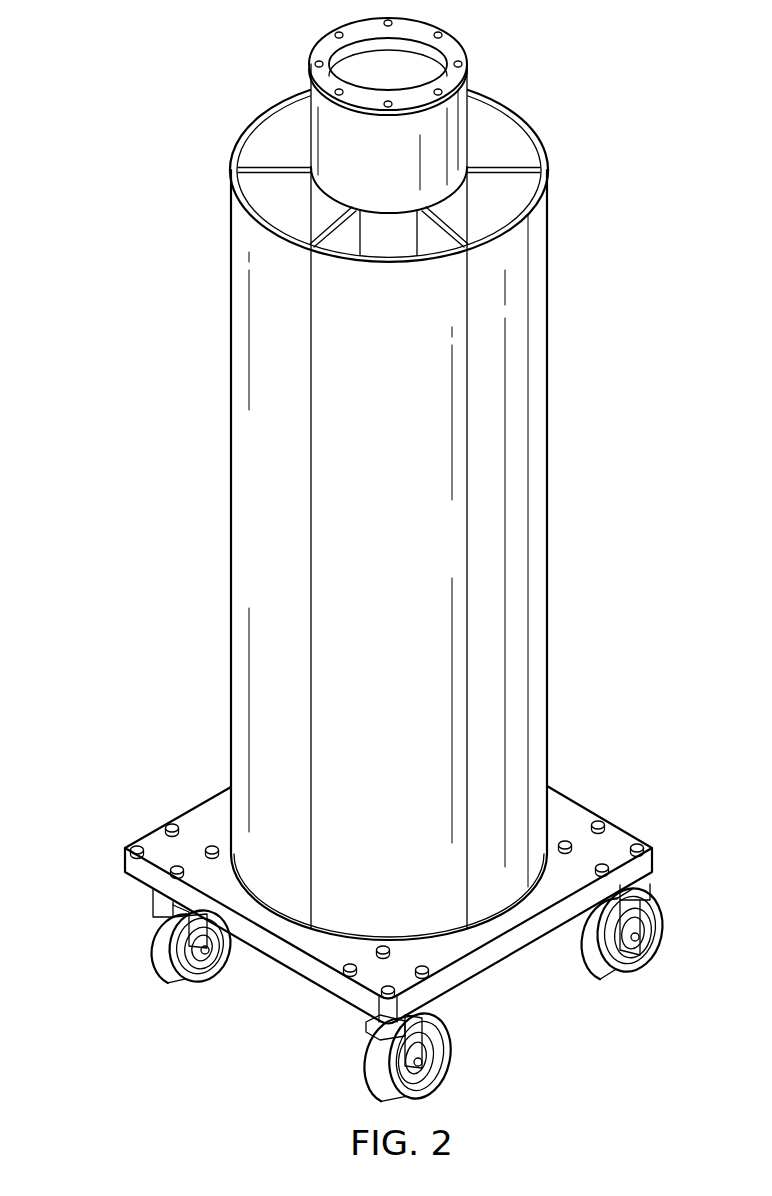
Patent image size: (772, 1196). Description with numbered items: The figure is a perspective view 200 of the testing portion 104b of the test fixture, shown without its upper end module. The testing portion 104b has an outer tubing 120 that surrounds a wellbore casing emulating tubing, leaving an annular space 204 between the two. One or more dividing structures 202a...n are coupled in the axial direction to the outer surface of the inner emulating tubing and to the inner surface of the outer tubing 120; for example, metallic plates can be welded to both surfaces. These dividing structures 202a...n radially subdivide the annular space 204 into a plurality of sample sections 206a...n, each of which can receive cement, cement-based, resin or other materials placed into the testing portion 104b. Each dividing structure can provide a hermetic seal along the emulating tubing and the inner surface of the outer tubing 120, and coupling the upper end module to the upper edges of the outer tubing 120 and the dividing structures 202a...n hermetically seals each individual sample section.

The perspective view 200 is at (96, 59).
The outer tubing 120 is at (552, 512).
The annular space 204 is at (388, 248).
The dividing structures 202a...n is at (262, 165).
The sample sections 206a...n is at (502, 126).
The testing portion 104b is at (152, 726).